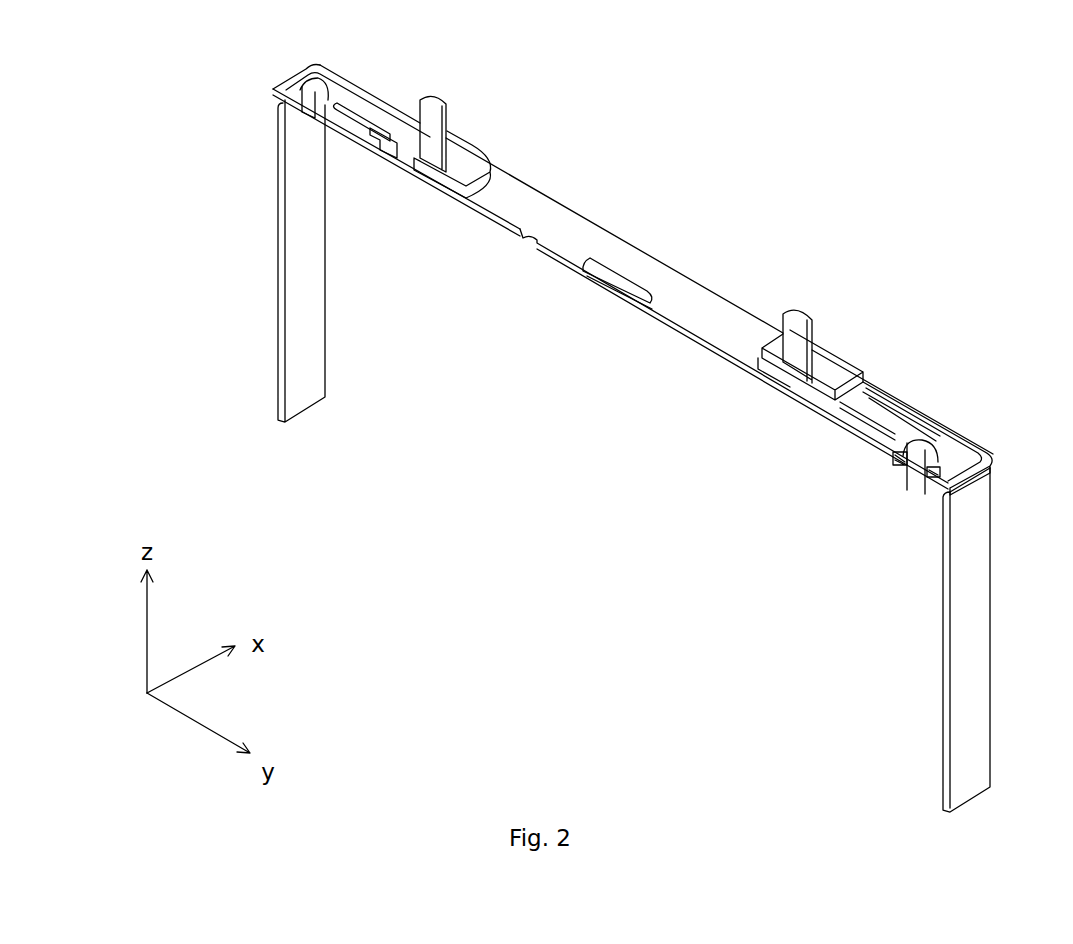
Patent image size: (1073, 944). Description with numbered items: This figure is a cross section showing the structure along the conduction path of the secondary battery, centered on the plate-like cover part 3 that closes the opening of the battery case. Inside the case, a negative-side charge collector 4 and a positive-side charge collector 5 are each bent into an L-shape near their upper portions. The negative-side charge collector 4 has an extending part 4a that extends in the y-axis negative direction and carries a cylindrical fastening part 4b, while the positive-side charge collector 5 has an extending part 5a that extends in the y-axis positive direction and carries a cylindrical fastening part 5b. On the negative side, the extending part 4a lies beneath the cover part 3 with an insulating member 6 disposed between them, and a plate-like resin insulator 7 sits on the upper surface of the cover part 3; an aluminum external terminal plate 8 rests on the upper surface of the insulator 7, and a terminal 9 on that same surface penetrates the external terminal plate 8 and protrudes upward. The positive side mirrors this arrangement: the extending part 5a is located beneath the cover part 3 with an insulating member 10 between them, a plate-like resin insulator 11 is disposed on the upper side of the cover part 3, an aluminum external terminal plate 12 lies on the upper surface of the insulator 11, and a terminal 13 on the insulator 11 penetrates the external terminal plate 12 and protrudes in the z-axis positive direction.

The cover part 3 is at (690, 292).
The negative-side charge collector 4 is at (1002, 642).
The extending part 4a is at (912, 482).
The fastening part 4b is at (923, 448).
The positive-side charge collector 5 is at (269, 228).
The extending part 5a is at (312, 130).
The fastening part 5b is at (314, 88).
The insulating member 6 is at (893, 460).
The insulator 7 is at (763, 368).
The external terminal plate 8 is at (887, 413).
The terminal 9 is at (802, 307).
The insulating member 10 is at (332, 138).
The insulator 11 is at (459, 193).
The external terminal plate 12 is at (352, 97).
The terminal 13 is at (434, 97).